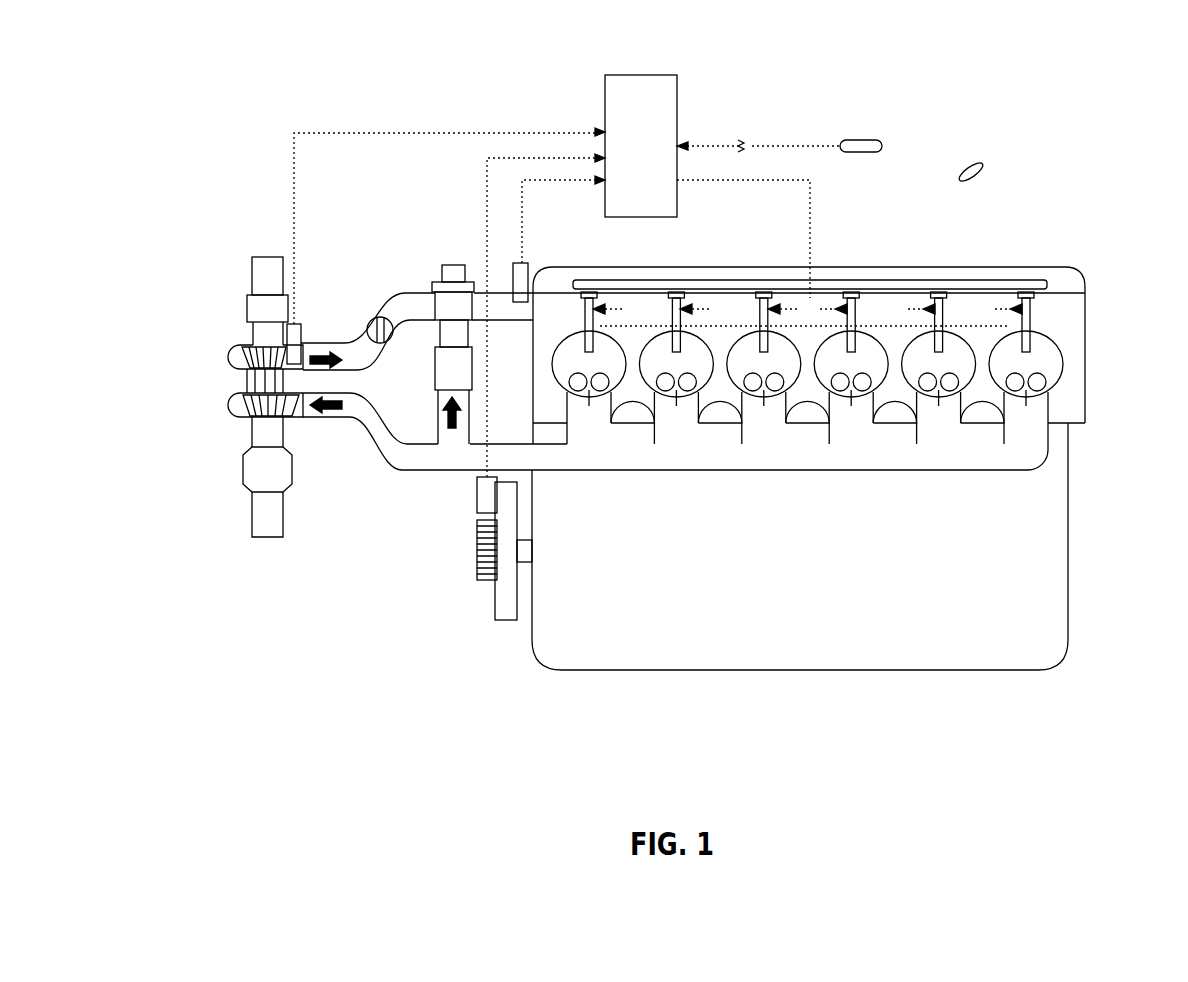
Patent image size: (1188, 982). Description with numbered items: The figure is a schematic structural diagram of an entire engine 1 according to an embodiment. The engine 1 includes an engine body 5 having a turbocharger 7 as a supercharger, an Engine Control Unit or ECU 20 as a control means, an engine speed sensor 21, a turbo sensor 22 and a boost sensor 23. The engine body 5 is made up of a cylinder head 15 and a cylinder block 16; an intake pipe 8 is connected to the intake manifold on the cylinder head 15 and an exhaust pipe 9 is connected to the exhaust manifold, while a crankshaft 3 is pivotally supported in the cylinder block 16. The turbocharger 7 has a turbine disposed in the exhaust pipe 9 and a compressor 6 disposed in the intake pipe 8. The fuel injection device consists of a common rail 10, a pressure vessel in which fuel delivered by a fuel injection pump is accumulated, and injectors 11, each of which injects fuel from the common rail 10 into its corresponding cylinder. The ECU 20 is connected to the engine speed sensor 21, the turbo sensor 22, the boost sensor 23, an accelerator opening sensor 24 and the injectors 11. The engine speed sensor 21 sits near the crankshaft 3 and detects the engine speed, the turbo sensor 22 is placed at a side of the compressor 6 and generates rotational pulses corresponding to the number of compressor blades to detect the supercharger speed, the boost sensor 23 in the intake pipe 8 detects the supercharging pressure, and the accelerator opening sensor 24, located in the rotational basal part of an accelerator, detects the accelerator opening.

The engine 1 is at (978, 160).
The crankshaft 3 is at (515, 558).
The engine body 5 is at (1089, 255).
The compressor 6 is at (228, 352).
The turbocharger 7 is at (222, 378).
The intake pipe 8 is at (502, 330).
The exhaust pipe 9 is at (331, 436).
The common rail 10 is at (913, 280).
The injectors 11 is at (1048, 340).
The cylinder head 15 is at (1092, 355).
The cylinder block 16 is at (1092, 506).
The Engine Control Unit (ECU) 20 is at (552, 276).
The engine speed sensor 21 is at (472, 496).
The turbo sensor 22 is at (303, 323).
The boost sensor 23 is at (537, 264).
The accelerator opening sensor 24 is at (887, 147).